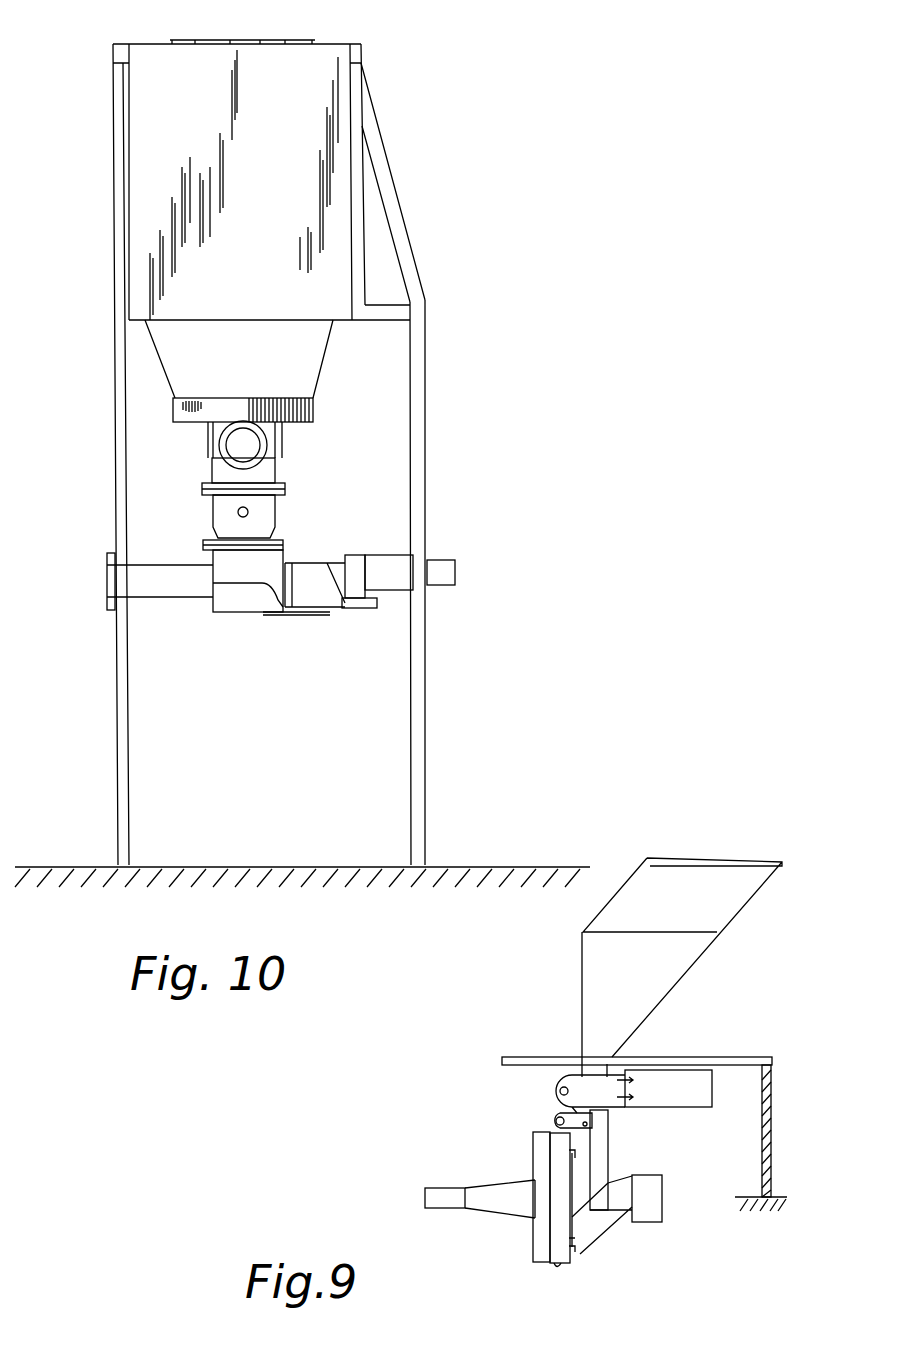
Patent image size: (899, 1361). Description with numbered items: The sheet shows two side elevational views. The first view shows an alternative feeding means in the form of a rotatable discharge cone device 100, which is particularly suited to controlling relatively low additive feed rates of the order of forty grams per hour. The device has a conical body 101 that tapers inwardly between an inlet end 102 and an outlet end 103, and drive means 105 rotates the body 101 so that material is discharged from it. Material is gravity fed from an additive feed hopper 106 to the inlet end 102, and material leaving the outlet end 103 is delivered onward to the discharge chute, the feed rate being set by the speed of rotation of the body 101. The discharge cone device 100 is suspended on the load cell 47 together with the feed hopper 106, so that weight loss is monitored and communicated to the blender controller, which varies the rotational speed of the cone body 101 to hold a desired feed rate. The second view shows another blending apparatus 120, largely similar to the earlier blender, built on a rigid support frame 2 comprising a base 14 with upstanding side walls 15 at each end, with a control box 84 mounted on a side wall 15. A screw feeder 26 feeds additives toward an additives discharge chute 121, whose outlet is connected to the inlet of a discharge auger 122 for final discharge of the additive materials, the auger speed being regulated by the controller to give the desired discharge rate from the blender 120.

In FIG. 10, the support frame 2 is at (352, 41).
In FIG. 9, the support frame 2 is at (770, 1097).
In FIG. 10, the control box 84 is at (323, 133).
In FIG. 10, the blending apparatus 120 is at (422, 208).
In FIG. 10, the side walls 15 is at (308, 347).
In FIG. 10, the base 14 is at (313, 408).
In FIG. 10, the screw feeder 26 is at (215, 452).
In FIG. 10, the additives discharge chute 121 is at (295, 475).
In FIG. 10, the discharge auger 122 is at (204, 611).
In FIG. 9, the additive feed hopper 106 is at (598, 972).
In FIG. 9, the load cell 47 is at (665, 1088).
In FIG. 9, the conical body 101 is at (447, 1198).
In FIG. 9, the inlet end 102 is at (525, 1218).
In FIG. 9, the outlet end 103 is at (420, 1199).
In FIG. 9, the drive means 105 is at (653, 1210).
In FIG. 9, the rotatable discharge cone device 100 is at (503, 1273).